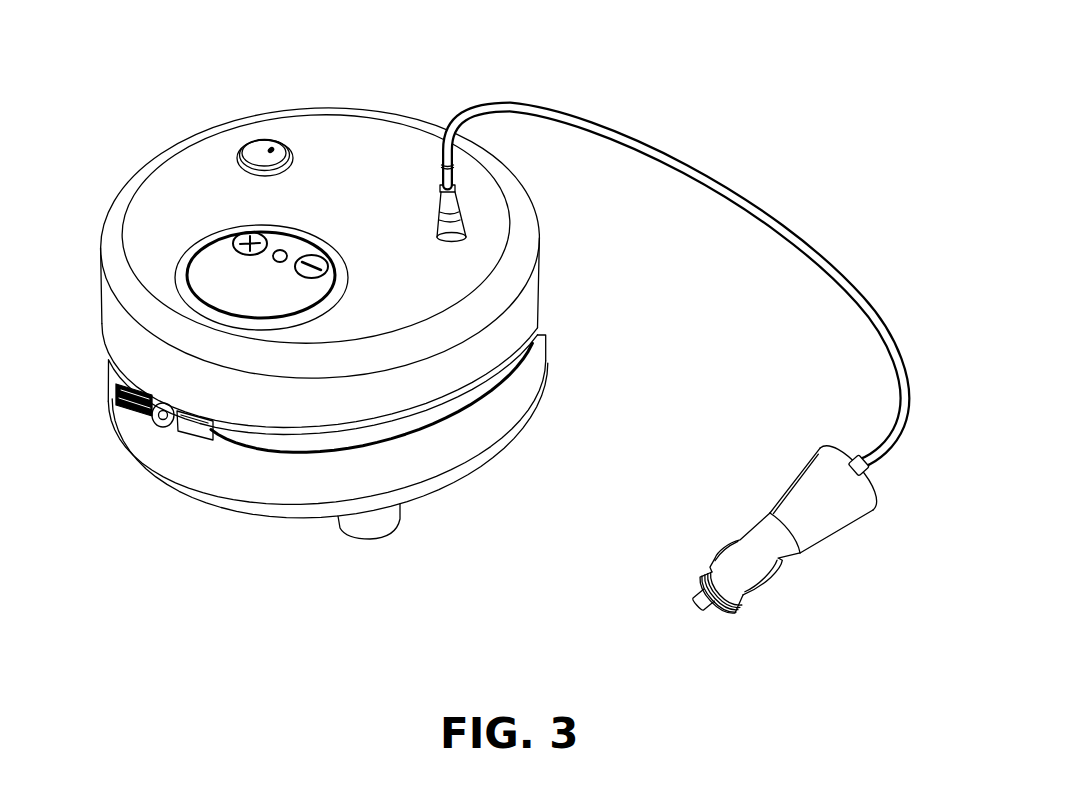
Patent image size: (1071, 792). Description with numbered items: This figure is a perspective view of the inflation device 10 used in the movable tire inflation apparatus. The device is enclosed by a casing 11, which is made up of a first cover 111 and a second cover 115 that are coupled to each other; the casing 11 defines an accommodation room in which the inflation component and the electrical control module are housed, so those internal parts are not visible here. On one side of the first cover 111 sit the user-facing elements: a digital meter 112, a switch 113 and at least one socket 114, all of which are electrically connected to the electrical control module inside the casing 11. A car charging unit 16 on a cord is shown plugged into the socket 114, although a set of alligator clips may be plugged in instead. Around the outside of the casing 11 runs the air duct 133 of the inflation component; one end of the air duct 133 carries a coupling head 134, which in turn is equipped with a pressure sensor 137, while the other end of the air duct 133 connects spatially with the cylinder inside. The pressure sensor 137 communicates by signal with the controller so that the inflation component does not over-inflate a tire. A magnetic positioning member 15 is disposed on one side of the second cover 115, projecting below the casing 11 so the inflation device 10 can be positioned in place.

The inflation device 10 is at (321, 292).
The casing 11 is at (372, 127).
The first cover 111 is at (417, 143).
The digital meter 112 is at (215, 262).
The switch 113 is at (262, 156).
The socket 114 is at (463, 236).
The second cover 115 is at (468, 462).
The air duct 133 is at (250, 440).
The coupling head 134 is at (120, 402).
The pressure sensor 137 is at (161, 413).
The magnetic positioning member 15 is at (372, 526).
The car charging unit 16 is at (717, 187).